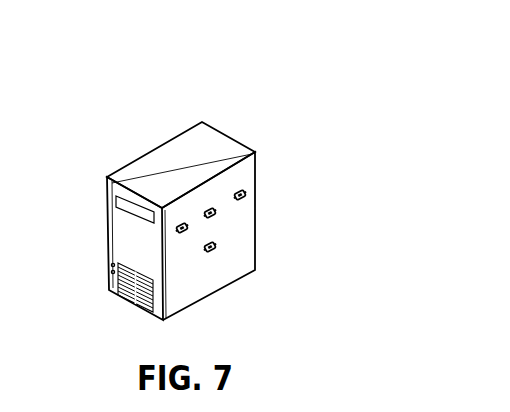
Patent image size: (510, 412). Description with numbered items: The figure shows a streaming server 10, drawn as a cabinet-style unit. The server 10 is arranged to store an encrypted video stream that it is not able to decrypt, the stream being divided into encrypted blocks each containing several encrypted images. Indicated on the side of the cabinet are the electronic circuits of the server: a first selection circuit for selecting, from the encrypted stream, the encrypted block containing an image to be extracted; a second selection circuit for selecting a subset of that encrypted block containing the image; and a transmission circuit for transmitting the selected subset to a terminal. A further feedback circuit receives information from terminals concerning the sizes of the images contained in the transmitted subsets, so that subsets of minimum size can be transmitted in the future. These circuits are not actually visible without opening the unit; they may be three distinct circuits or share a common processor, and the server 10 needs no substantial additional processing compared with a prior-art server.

The streaming server 10 is at (117, 55).